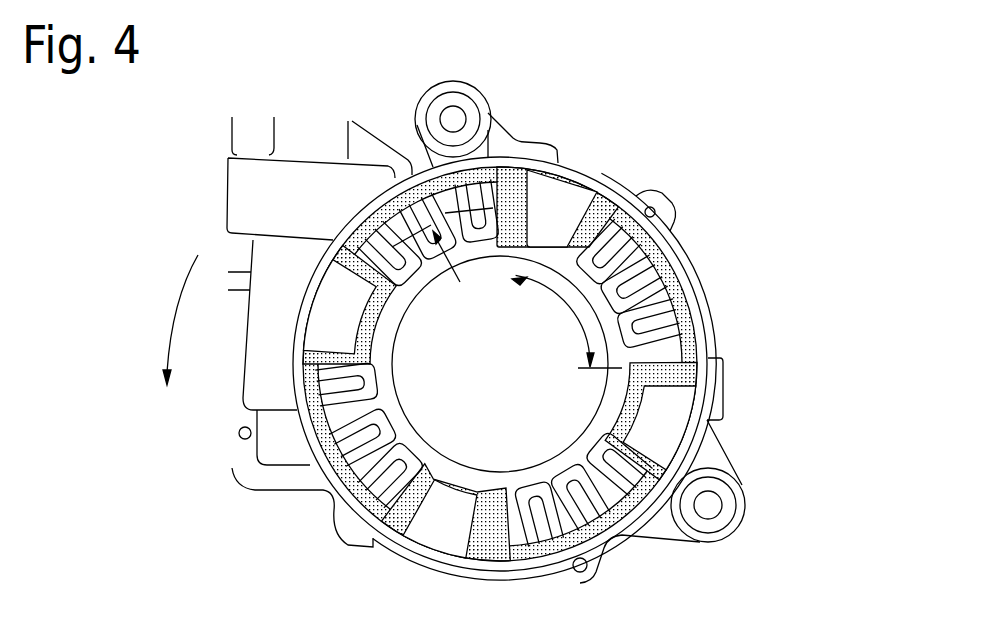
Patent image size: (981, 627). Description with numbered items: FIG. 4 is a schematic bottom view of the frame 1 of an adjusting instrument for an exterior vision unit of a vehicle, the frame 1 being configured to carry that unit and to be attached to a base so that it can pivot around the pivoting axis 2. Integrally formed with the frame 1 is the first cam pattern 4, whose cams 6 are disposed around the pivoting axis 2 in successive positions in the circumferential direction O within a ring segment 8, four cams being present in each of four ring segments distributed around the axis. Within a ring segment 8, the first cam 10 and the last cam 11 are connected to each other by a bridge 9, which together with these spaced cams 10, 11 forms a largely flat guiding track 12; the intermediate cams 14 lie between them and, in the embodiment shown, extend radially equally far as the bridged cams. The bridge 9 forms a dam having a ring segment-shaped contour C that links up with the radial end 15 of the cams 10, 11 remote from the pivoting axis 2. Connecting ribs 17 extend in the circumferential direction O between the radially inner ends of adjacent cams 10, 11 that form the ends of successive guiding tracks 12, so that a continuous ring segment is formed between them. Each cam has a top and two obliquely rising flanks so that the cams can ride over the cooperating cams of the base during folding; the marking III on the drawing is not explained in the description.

The frame 1 is at (724, 115).
The pivoting axis 2 is at (502, 368).
The first cam pattern 4 is at (587, 170).
The cams 6 is at (380, 473).
The ring segment 8 is at (567, 321).
The bridge 9 is at (673, 290).
The first cam 10 is at (597, 227).
The last cam 11 is at (667, 367).
The guiding track 12 is at (688, 348).
The intermediate cams 14 is at (627, 277).
The radial end 15 is at (357, 253).
The connecting ribs 17 is at (527, 247).
The ring segment-shaped contour C is at (637, 243).
The view direction III is at (445, 213).
The circumferential direction O is at (171, 320).